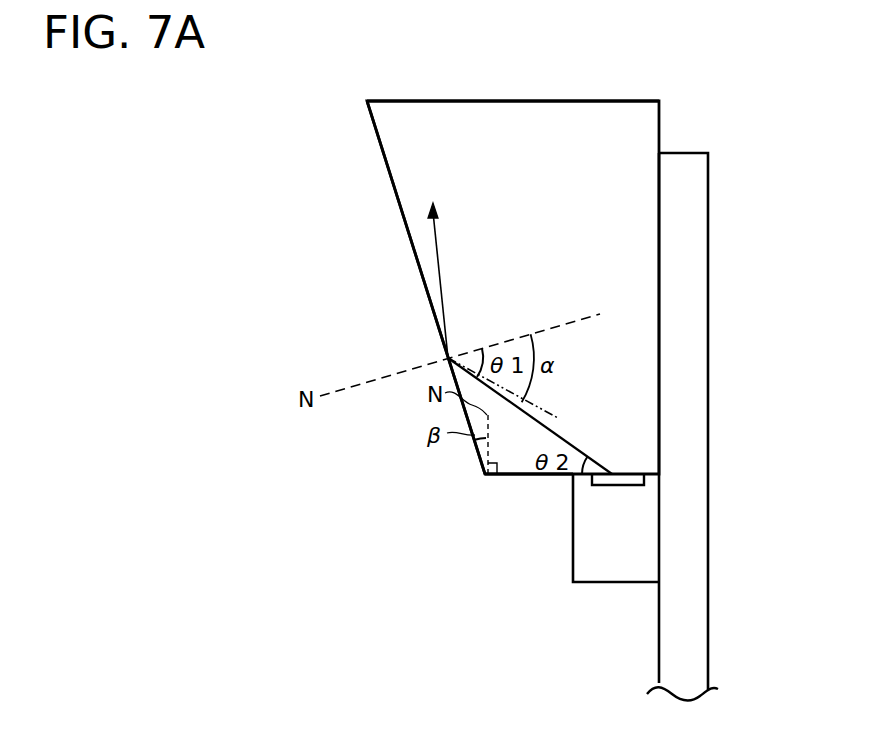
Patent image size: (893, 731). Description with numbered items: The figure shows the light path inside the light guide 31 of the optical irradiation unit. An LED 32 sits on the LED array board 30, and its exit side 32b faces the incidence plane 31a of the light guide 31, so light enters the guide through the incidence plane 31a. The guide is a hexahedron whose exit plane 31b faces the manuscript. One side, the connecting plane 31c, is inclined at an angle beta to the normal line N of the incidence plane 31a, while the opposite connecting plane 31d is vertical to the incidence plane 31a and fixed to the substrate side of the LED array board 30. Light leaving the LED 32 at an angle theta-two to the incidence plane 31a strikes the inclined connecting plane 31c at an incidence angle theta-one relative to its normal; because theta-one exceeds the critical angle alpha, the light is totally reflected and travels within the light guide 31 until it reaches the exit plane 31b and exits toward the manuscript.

The LED array board 30 is at (708, 288).
The light guide 31 is at (440, 76).
The incidence plane 31a is at (522, 477).
The exit plane 31b is at (622, 100).
The connecting plane 31c is at (397, 208).
The connecting plane 31d is at (659, 190).
The LED 32 is at (573, 563).
The exit side 32b is at (630, 474).